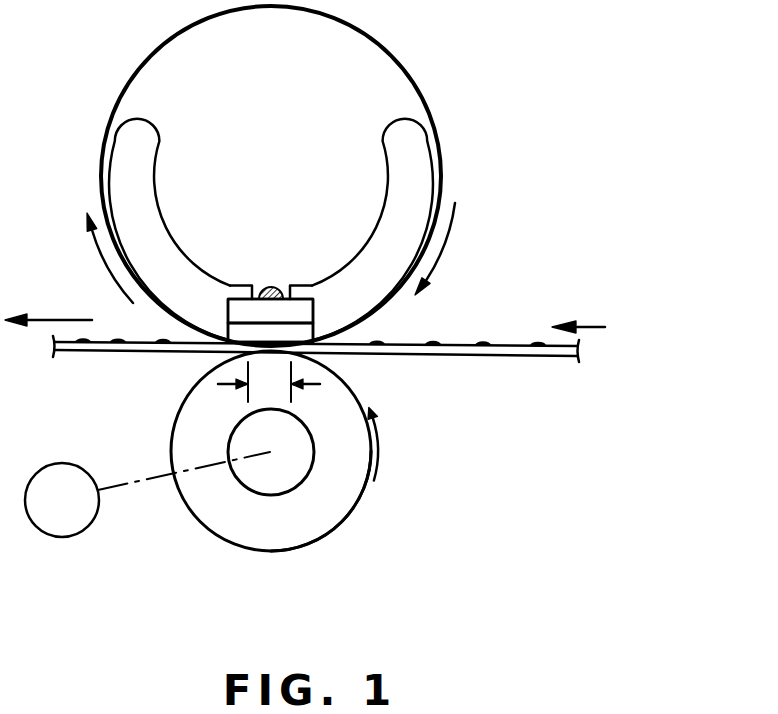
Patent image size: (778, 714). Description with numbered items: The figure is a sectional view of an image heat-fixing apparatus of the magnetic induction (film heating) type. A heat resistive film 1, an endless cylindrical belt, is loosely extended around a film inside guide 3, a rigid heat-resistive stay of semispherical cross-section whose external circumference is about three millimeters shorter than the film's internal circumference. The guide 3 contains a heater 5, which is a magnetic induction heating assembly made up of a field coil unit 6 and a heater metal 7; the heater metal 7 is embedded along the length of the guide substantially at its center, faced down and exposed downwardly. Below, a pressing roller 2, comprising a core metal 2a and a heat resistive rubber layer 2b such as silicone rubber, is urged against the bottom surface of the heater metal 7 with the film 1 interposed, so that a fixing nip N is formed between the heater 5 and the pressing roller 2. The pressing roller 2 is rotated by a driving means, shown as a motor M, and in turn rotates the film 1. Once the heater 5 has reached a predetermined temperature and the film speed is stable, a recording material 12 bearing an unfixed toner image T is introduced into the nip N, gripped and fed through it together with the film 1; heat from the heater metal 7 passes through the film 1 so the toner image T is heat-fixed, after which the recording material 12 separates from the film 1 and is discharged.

The heat resistive film 1 is at (110, 114).
The pressing roller 2 is at (360, 503).
The core metal 2a is at (258, 475).
The heat resistive rubber layer 2b is at (305, 525).
The film inside guide 3 is at (400, 155).
The heater 5 is at (226, 290).
The field coil unit 6 is at (298, 310).
The heater metal 7 is at (297, 332).
The recording material 12 is at (462, 355).
The unfixed toner image T is at (488, 346).
The fixing nip N is at (269, 382).
The motor M is at (147, 494).